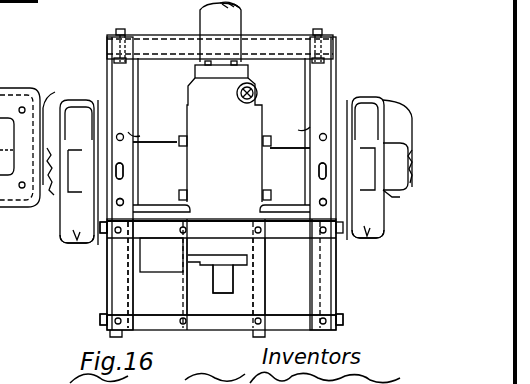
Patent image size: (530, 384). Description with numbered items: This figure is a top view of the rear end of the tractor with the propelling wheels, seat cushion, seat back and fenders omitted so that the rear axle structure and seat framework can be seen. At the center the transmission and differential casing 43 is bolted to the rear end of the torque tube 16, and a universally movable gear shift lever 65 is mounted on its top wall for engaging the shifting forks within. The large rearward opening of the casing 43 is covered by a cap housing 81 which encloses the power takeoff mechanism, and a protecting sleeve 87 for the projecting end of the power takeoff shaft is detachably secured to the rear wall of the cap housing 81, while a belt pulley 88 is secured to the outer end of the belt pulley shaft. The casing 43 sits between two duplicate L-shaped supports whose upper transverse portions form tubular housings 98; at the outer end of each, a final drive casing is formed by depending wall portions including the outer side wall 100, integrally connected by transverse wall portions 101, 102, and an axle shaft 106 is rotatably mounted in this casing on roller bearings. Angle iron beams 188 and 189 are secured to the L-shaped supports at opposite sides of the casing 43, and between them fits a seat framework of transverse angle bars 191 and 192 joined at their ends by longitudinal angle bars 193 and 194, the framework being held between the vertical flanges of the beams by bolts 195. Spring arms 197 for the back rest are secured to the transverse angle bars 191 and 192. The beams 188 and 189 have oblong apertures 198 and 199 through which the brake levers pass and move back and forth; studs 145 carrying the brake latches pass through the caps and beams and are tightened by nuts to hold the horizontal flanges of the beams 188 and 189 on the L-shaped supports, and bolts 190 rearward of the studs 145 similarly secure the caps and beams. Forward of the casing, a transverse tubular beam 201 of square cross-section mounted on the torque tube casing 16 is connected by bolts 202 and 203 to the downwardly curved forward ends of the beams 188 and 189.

The torque tube 16 is at (237, 17).
The transmission and differential casing 43 is at (191, 94).
The gear shift lever 65 is at (258, 93).
The cap housing 81 is at (203, 254).
The protecting sleeve 87 is at (232, 268).
The belt pulley 88 is at (155, 272).
The tubular housing 98 is at (291, 204).
The outer side wall 100 is at (55, 210).
The transverse wall portion 101 is at (88, 242).
The transverse wall portion 102 is at (80, 116).
The axle shaft 106 is at (52, 110).
The stud 145 is at (128, 133).
The angle iron beam 188 is at (112, 77).
The angle iron beam 189 is at (338, 76).
The bolt 190 is at (124, 201).
The transverse angle bar 191 is at (286, 233).
The transverse angle bar 192 is at (291, 316).
The longitudinal angle bar 193 is at (123, 303).
The longitudinal angle bar 194 is at (316, 279).
The bolt 195 is at (102, 242).
The spring arm 197 is at (253, 303).
The oblong aperture 198 is at (124, 170).
The oblong aperture 199 is at (318, 172).
The transverse tubular beam 201 is at (280, 40).
The bolt 202 is at (120, 28).
The bolt 203 is at (318, 28).